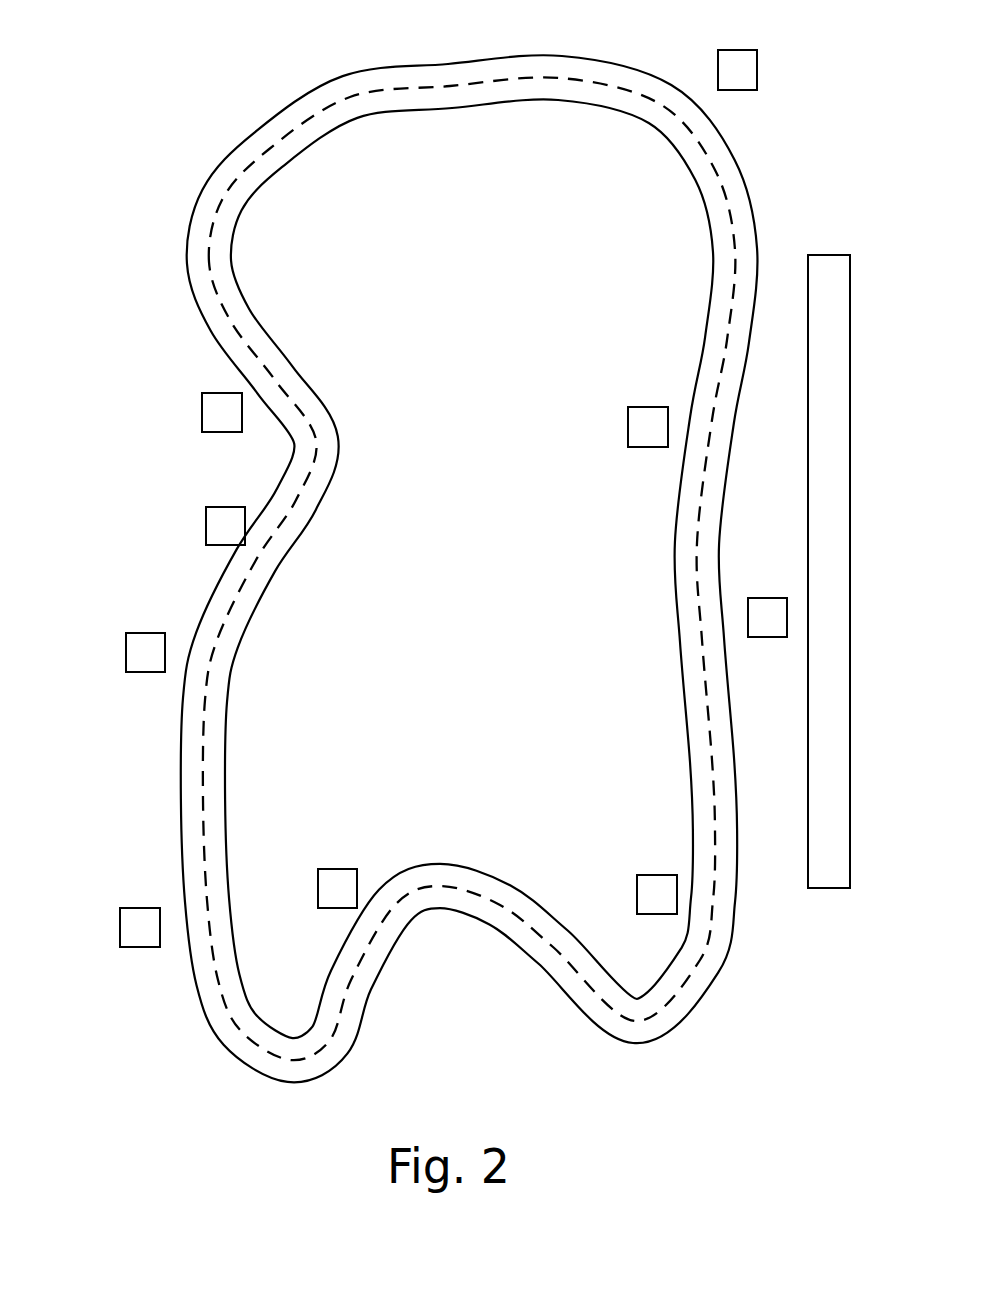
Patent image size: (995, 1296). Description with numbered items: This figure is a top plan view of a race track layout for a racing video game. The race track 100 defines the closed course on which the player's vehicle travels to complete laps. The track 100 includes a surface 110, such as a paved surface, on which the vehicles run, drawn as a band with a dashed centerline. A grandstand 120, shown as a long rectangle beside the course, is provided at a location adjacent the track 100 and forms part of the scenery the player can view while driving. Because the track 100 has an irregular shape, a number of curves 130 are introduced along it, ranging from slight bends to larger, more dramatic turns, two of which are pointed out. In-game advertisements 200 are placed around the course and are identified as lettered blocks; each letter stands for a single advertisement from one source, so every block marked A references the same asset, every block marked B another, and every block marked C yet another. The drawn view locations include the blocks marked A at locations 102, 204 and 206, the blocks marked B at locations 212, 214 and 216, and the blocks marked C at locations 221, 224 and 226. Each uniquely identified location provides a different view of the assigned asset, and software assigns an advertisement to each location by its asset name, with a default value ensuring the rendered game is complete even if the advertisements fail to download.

The race track 100 is at (148, 131).
The surface 110 is at (212, 238).
The grandstand 120 is at (828, 254).
The curves 130 is at (338, 428).
The in-game advertisements 200 is at (718, 63).
The marker A 102 is at (741, 89).
The view location 212 is at (222, 433).
The view location 226 is at (217, 546).
The view location 204 is at (145, 673).
The view location 214 is at (140, 947).
The view location 206 is at (331, 908).
The marker C 221 is at (648, 447).
The view location 216 is at (766, 640).
The view location 224 is at (657, 914).